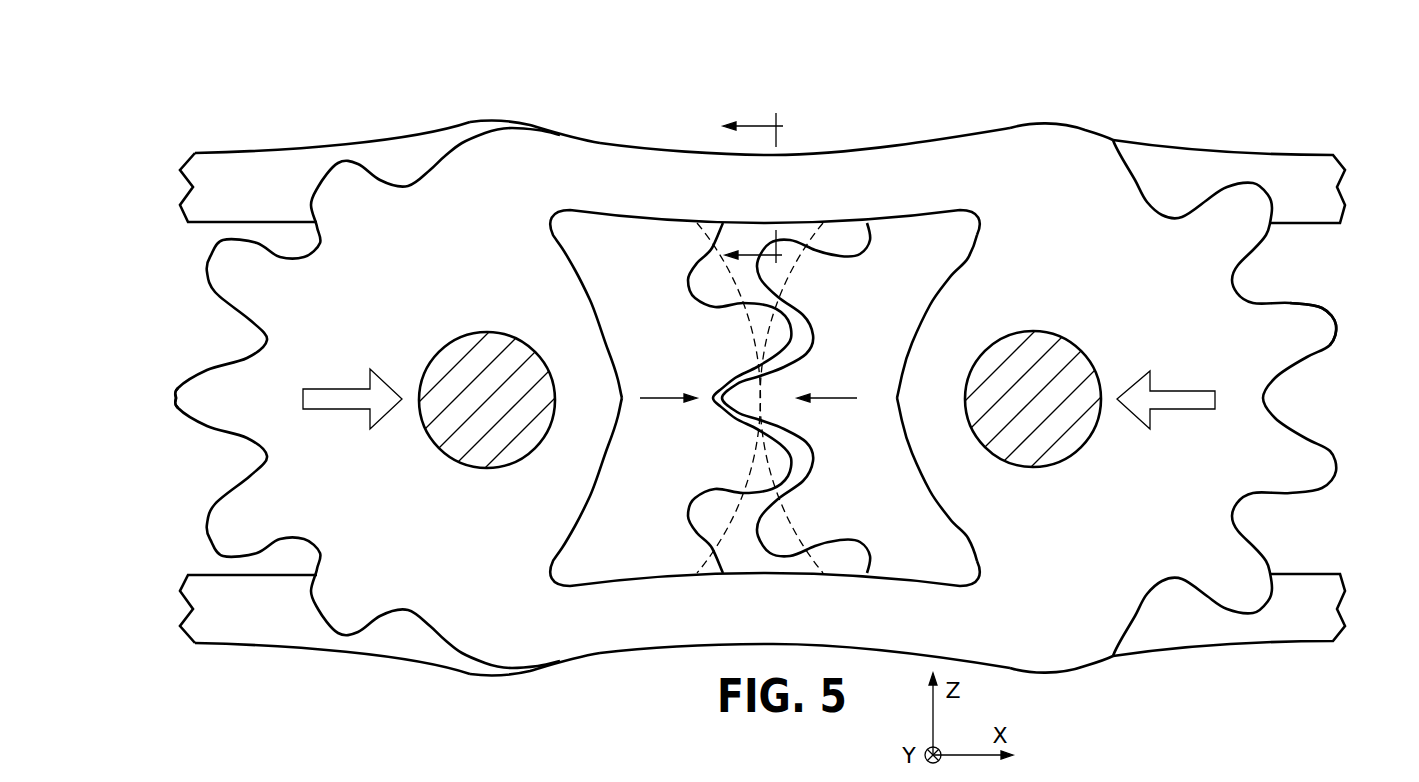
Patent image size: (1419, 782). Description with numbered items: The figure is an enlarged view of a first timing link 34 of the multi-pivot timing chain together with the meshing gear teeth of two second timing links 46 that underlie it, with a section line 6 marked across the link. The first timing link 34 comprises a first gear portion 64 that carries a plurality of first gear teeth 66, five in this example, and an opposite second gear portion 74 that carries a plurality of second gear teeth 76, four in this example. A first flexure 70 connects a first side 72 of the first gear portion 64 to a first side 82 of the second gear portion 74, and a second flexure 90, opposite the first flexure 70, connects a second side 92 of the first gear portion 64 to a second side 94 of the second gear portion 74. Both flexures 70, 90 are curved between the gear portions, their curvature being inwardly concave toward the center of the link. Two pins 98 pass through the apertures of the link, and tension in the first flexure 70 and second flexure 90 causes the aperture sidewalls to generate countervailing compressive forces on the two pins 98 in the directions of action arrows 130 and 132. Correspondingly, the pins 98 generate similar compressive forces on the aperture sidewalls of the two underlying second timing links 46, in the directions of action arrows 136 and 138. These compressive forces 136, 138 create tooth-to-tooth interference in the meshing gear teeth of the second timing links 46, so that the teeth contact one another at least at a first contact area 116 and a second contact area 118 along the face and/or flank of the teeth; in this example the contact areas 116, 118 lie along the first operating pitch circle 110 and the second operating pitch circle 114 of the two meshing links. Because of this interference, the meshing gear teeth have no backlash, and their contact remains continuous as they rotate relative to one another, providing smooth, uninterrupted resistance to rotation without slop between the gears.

The section line 6- 6 is at (753, 190).
The first timing link 34 is at (963, 136).
The second timing link 46 is at (337, 146).
The first gear portion 64 is at (186, 339).
The first gear teeth 66 is at (176, 412).
The first flexure 70 is at (766, 200).
The first side of the first gear portion 72 is at (468, 112).
The second gear portion 74 is at (1350, 374).
The second gear teeth 76 is at (1335, 320).
The first side of the second gear portion 82 is at (1060, 110).
The second flexure 90 is at (766, 620).
The second side of the first gear portion 92 is at (468, 690).
The second side of the second gear portion 94 is at (1062, 696).
The pin 98 is at (487, 331).
The first operating pitch circle 110 is at (790, 520).
The second operating pitch circle 114 is at (717, 262).
The first contact area 116 is at (748, 369).
The second contact area 118 is at (748, 430).
The action arrow 130 is at (337, 388).
The action arrow 132 is at (1185, 390).
The action arrow 136 is at (640, 398).
The action arrow 138 is at (849, 397).